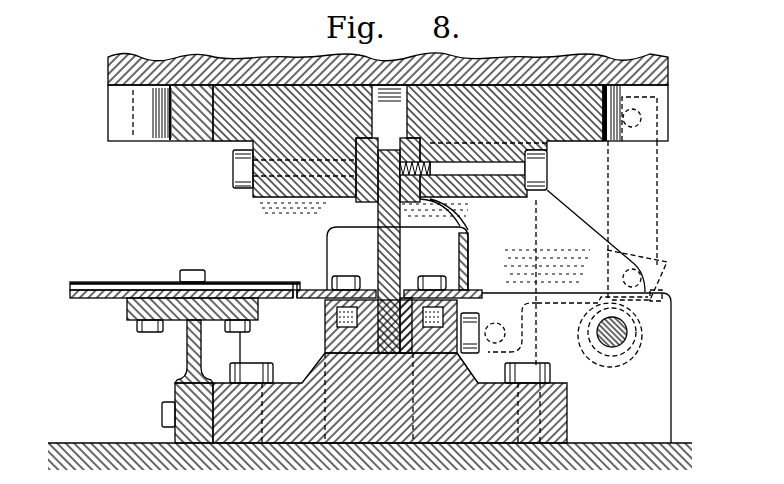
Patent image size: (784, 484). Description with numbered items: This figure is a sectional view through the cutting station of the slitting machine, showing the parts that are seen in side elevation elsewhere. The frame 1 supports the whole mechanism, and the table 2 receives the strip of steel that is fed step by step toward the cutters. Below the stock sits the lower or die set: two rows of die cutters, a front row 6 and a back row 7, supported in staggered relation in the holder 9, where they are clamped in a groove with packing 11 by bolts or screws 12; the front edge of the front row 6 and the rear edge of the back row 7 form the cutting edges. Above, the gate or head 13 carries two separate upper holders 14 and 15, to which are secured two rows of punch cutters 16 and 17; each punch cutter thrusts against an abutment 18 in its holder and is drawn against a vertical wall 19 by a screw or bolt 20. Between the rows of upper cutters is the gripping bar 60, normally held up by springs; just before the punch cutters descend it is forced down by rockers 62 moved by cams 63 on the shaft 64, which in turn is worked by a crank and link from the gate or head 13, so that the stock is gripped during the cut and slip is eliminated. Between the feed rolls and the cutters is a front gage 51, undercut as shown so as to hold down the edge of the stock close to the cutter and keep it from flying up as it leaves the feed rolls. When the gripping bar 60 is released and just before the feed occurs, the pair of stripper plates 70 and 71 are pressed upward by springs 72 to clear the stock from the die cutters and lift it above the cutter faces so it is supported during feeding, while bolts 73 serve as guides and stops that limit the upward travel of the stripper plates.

The frame 1 is at (110, 450).
The table 2 is at (72, 298).
The gage 51 is at (92, 285).
The front row of die cutters 6 is at (405, 290).
The back row of die cutters 7 is at (378, 289).
The stripper plate 71 is at (302, 290).
The bolt 73 is at (345, 279).
The spring 72 is at (327, 305).
The gripping bar 60 is at (380, 247).
The row of punch cutters 17 is at (365, 203).
The row of punch cutters 16 is at (410, 205).
The abutment 18 is at (424, 139).
The vertical wall 19 is at (462, 198).
The stripper plate 70 is at (471, 289).
The screw or bolt 20 is at (541, 177).
The upper holder 14 is at (574, 130).
The upper holder 15 is at (197, 137).
The gate or head 13 is at (660, 73).
The rocker 62 is at (583, 207).
The cam 63 is at (677, 316).
The shaft 64 is at (632, 343).
The bolt or screw 12 is at (473, 330).
The packing 11 is at (464, 352).
The holder 9 is at (556, 412).